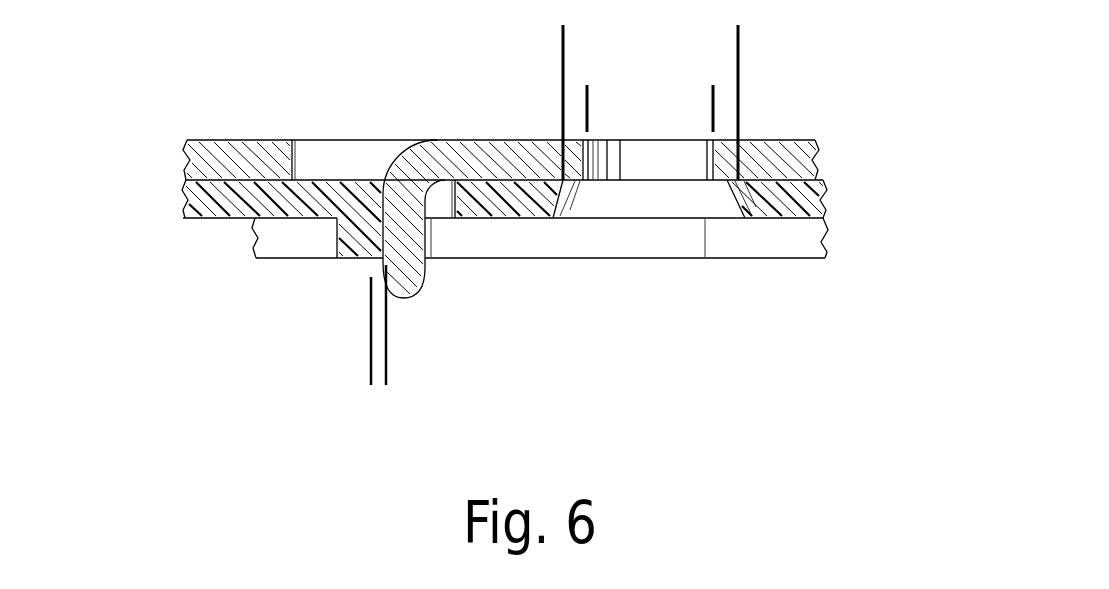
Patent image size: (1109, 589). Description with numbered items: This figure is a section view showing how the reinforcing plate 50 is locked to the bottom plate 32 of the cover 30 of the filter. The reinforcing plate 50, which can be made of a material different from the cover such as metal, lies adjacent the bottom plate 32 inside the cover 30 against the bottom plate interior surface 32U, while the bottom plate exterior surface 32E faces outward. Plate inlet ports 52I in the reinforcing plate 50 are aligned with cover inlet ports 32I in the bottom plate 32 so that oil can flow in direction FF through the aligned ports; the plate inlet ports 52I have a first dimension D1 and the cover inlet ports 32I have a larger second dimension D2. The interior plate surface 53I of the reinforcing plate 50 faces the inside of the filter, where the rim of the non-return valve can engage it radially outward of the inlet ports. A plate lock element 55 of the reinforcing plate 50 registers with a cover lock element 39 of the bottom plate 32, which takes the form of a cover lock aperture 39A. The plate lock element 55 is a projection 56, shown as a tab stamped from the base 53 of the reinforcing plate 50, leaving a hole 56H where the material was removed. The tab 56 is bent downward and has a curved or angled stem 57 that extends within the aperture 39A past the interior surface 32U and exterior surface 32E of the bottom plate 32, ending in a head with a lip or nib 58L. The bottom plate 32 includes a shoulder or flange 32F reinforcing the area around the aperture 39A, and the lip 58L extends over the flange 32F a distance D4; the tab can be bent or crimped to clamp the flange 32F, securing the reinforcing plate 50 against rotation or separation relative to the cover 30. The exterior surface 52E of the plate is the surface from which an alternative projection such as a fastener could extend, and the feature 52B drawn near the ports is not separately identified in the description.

The reinforcing plate 50 is at (205, 135).
The base 53 is at (485, 140).
The hole 56H is at (338, 158).
The stem 57 is at (398, 200).
The plate lock element 55 is at (472, 236).
The plate lock projection 56 is at (423, 287).
The interior plate surface 53I is at (772, 140).
The plate exterior surface 52E is at (790, 180).
The bottom plate 32 is at (823, 198).
The bottom plate interior surface 32U is at (820, 180).
The bottom plate exterior surface 32E is at (790, 220).
The flange 32F is at (353, 243).
The cover inlet ports 32I is at (619, 197).
The bevel 52B is at (727, 182).
The plate inlet ports 52I is at (689, 155).
The cover lock element 39 is at (496, 232).
The cover lock apertures 39A is at (442, 208).
The cover 30 is at (832, 211).
The lip 58L is at (372, 270).
The distance D4 is at (323, 366).
The second dimension D2 is at (736, 48).
The first dimension D1 is at (711, 107).
The flow direction FF is at (662, 180).